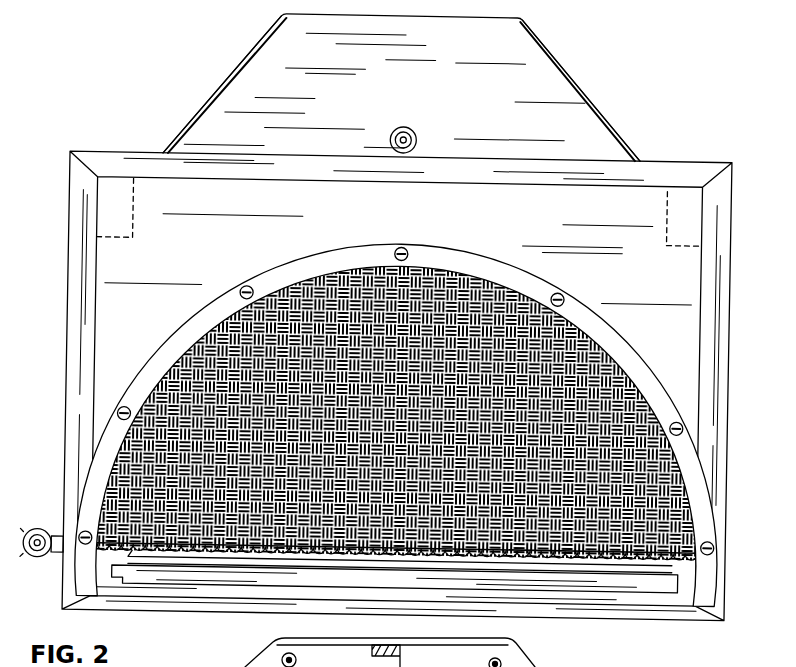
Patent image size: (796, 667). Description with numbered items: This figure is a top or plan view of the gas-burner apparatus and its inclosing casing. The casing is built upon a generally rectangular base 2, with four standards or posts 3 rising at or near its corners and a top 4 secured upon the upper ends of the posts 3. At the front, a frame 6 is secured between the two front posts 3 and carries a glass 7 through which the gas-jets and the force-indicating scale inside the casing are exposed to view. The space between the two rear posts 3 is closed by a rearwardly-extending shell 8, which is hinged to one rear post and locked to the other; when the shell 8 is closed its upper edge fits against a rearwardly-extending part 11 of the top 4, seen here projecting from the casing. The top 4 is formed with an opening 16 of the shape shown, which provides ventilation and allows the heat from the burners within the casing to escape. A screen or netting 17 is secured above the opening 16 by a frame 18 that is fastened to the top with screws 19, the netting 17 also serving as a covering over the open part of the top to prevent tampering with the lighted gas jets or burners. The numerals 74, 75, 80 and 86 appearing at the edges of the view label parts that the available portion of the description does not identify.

The base 2 is at (141, 605).
The standards or posts 3 is at (130, 213).
The top 4 is at (399, 248).
The frame 6 is at (183, 585).
The glass 7 is at (235, 567).
The shell 8 is at (404, 17).
The rearwardly-extending part 11 is at (402, 86).
The opening 16 is at (611, 562).
The screen or netting 17 is at (507, 283).
The frame 18 is at (80, 491).
The screws 19 is at (404, 248).
The knob 86 is at (36, 562).
The bracket 74 is at (372, 661).
The pivot 75 is at (291, 652).
The pin 80 is at (481, 659).